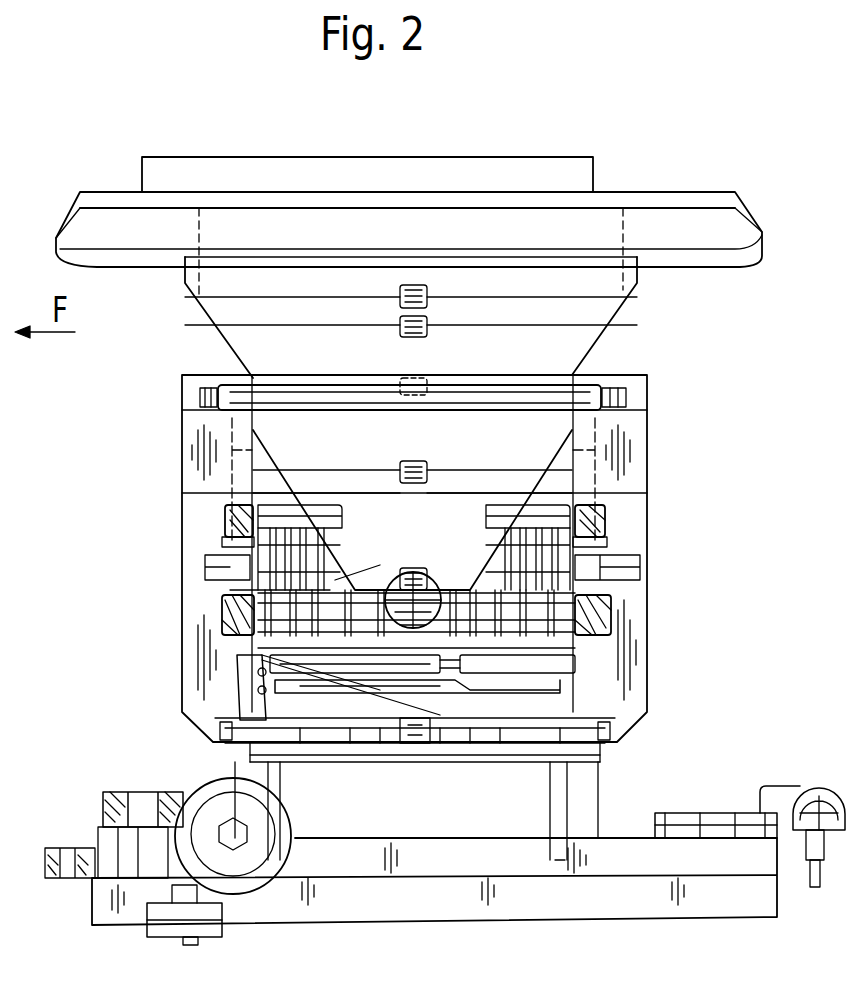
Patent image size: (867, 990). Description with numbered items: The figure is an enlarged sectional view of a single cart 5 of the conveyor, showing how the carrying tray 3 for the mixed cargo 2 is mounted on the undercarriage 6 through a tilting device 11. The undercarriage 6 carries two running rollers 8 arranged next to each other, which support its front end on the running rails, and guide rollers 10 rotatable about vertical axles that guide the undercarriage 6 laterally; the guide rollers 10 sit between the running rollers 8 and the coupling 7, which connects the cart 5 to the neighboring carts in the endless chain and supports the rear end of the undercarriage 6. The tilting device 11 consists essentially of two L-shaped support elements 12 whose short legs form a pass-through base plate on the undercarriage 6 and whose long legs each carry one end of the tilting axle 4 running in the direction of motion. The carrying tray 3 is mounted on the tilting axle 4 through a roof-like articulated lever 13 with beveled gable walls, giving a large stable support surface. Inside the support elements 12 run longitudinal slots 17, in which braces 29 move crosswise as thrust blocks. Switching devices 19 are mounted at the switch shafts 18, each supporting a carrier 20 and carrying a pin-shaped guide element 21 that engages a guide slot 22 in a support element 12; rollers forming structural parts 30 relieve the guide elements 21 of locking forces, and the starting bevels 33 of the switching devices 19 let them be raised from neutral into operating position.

The mixed cargo 2 is at (578, 172).
The carrying tray 3 is at (730, 232).
The tilting axle 4 is at (528, 388).
The cart 5 is at (49, 168).
The undercarriage 6 is at (590, 860).
The coupling 7 is at (835, 812).
The running rollers 8 is at (253, 876).
The guide rollers 10 is at (147, 921).
The tilting device 11 is at (116, 594).
The support elements 12 is at (622, 463).
The lever 13 is at (596, 308).
The longitudinal slot 17 is at (222, 640).
The switch shafts 18 is at (592, 622).
The switching device 19 is at (575, 664).
The carriers 20 is at (230, 590).
The guide element 21 is at (240, 517).
The guide slot 22 is at (222, 537).
The brace 29 is at (612, 606).
The structural parts 30 is at (577, 692).
The starting bevels 33 is at (238, 676).